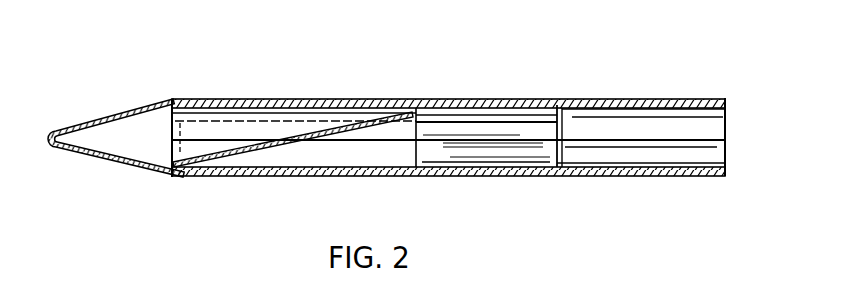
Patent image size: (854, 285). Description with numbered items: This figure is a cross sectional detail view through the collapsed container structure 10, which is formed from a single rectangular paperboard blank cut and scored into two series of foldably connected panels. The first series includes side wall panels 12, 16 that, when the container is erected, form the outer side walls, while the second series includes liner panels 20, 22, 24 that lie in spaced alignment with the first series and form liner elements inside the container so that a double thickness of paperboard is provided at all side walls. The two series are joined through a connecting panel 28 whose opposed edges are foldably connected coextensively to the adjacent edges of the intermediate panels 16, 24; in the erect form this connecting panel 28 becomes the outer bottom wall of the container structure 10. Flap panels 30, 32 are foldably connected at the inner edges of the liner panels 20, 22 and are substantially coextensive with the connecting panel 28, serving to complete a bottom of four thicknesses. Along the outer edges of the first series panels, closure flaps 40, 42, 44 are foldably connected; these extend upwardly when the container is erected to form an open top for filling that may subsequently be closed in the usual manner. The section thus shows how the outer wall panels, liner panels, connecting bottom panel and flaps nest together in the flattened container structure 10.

The container structure 10 is at (191, 97).
The side wall panel 12 is at (258, 98).
The side wall panel 16 is at (345, 177).
The liner panel 20 is at (362, 163).
The liner panel 22 is at (480, 142).
The liner panel 24 is at (445, 117).
The connecting panel 28 is at (80, 155).
The flap panel 30 is at (223, 157).
The flap panel 32 is at (295, 160).
The closure flap 40 is at (583, 100).
The closure flap 42 is at (720, 157).
The closure flap 44 is at (593, 170).